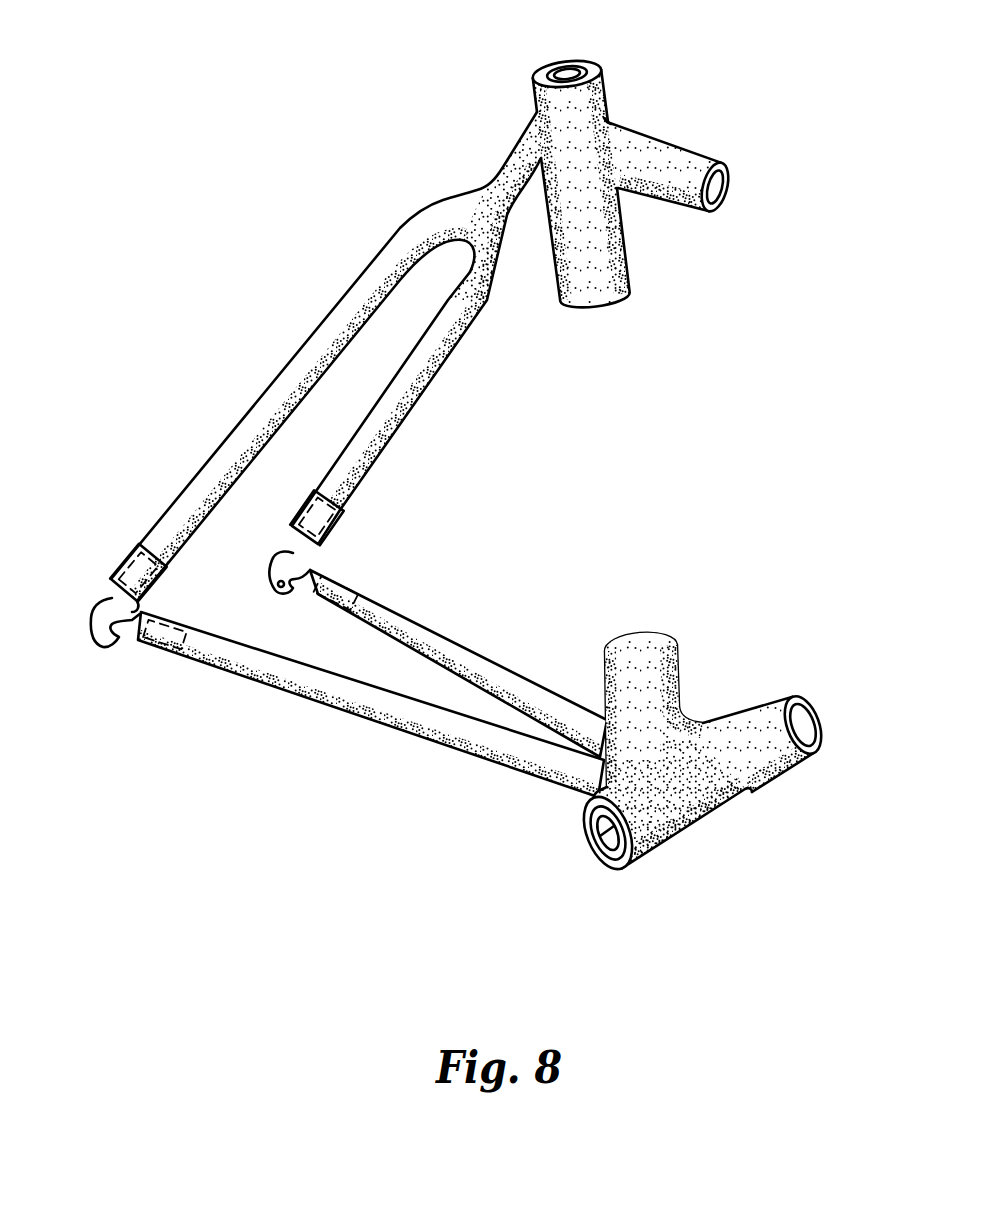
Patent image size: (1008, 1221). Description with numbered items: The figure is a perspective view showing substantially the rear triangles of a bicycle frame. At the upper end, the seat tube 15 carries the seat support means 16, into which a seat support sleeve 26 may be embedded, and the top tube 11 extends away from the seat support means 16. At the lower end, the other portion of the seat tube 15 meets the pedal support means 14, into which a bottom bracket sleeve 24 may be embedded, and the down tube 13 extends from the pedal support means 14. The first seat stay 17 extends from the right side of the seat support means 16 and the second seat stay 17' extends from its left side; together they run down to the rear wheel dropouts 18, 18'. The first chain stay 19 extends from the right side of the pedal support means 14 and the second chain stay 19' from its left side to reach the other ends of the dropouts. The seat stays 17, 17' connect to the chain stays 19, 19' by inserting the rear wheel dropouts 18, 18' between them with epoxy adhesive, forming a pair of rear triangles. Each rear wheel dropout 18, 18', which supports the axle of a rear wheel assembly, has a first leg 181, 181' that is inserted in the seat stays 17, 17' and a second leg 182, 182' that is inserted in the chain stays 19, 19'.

The top tube 11 is at (680, 157).
The down tube 13 is at (747, 727).
The pedal support means 14 is at (703, 800).
The seat tube 15 is at (628, 262).
The seat support means 16 is at (607, 112).
The first seat stay 17 is at (326, 356).
The second seat stay 17' is at (416, 351).
The rear wheel dropout 18 is at (100, 590).
The rear wheel dropout 18' is at (342, 548).
The first chain stay 19 is at (371, 728).
The second chain stay 19' is at (458, 663).
The bottom bracket sleeve 24 is at (603, 857).
The seat support sleeve 26 is at (547, 67).
The first leg 181 is at (129, 543).
The first leg 181' is at (290, 517).
The second leg 182 is at (144, 672).
The second leg 182' is at (392, 573).